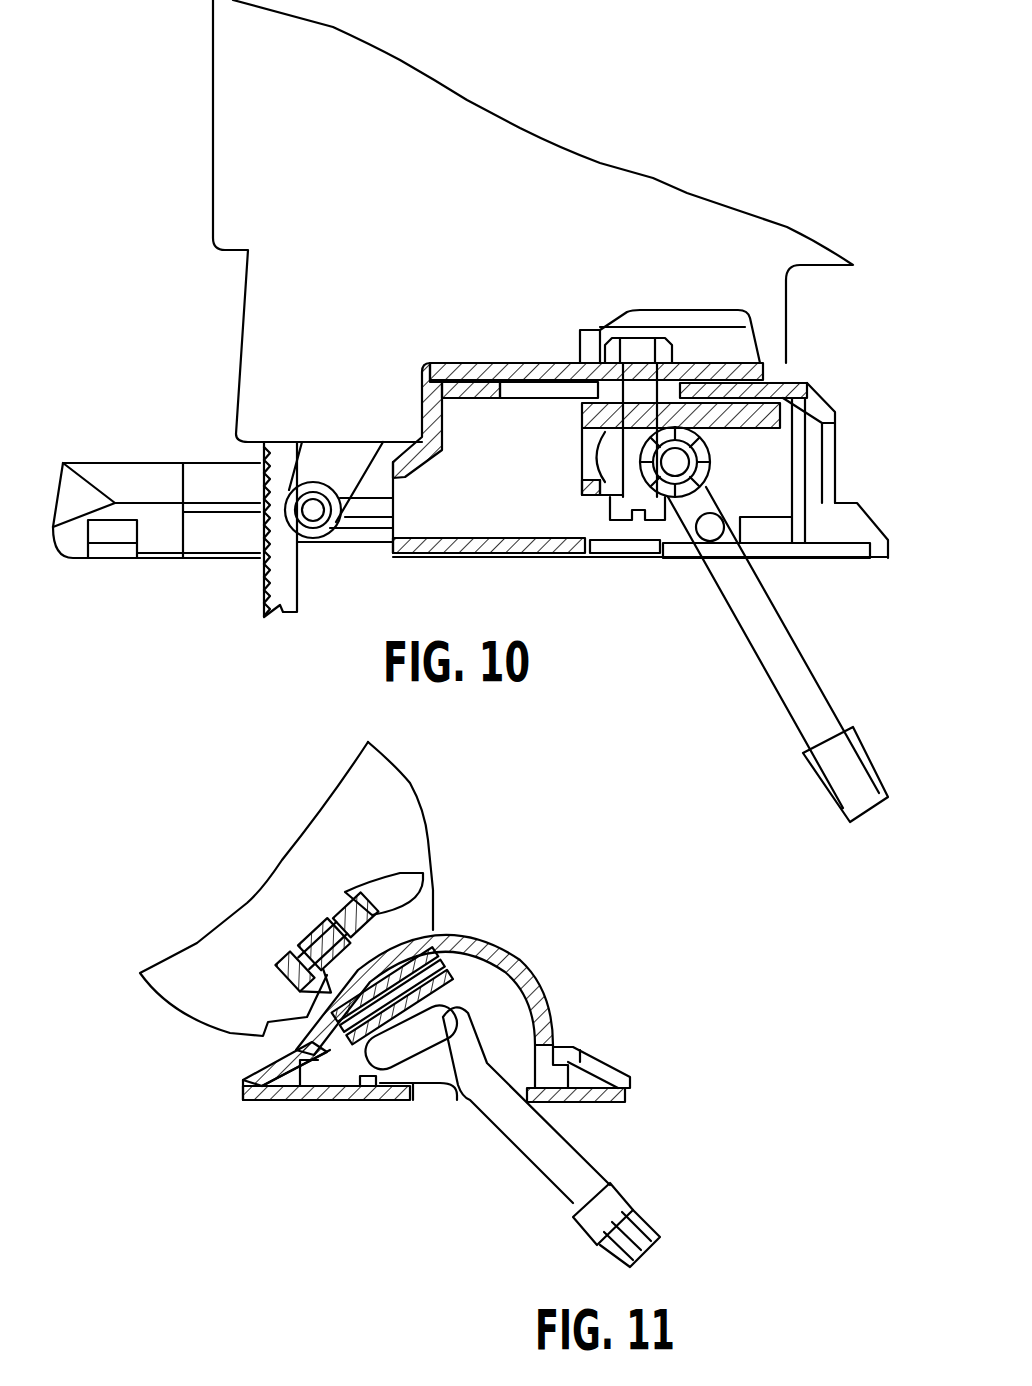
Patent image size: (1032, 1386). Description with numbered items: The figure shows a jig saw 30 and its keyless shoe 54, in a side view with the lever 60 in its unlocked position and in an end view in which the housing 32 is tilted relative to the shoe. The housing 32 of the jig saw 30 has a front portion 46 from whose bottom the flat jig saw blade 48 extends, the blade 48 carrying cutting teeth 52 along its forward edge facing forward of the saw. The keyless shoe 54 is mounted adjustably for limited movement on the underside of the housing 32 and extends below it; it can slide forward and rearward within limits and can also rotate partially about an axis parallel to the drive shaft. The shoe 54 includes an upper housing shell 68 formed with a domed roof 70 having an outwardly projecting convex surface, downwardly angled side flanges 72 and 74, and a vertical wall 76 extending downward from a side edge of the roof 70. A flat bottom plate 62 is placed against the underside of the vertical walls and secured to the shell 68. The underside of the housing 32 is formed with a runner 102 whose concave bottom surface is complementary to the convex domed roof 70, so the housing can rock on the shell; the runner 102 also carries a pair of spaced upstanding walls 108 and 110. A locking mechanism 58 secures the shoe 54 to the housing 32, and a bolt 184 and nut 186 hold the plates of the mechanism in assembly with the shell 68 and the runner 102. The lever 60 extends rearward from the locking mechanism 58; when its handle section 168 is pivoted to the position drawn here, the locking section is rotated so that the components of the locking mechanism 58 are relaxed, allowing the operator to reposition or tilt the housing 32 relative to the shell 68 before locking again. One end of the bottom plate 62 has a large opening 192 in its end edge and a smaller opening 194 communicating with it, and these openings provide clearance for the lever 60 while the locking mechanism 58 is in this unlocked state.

In FIG. 10, the jig saw 30 is at (706, 152).
In FIG. 11, the jig saw 30 is at (238, 812).
In FIG. 10, the housing 32 is at (586, 152).
In FIG. 11, the housing 32 is at (414, 788).
In FIG. 10, the front portion 46 is at (213, 130).
In FIG. 10, the jig saw blade 48 is at (280, 618).
In FIG. 10, the cutting teeth 52 is at (262, 578).
In FIG. 10, the keyless shoe 54 is at (882, 500).
In FIG. 10, the locking mechanism 58 is at (580, 464).
In FIG. 11, the locking mechanism 58 is at (396, 1087).
In FIG. 10, the lever 60 is at (770, 687).
In FIG. 11, the lever 60 is at (545, 1192).
In FIG. 10, the bottom plate 62 is at (822, 560).
In FIG. 11, the bottom plate 62 is at (624, 1112).
In FIG. 10, the upper housing shell 68 is at (843, 448).
In FIG. 11, the upper housing shell 68 is at (560, 1023).
In FIG. 11, the domed roof 70 is at (527, 992).
In FIG. 11, the side flange 72 is at (265, 1066).
In FIG. 11, the side flange 74 is at (598, 1075).
In FIG. 11, the vertical wall 76 is at (330, 1078).
In FIG. 10, the runner 102 is at (770, 338).
In FIG. 11, the runner 102 is at (370, 897).
In FIG. 11, the upstanding wall 108 is at (288, 945).
In FIG. 11, the upstanding wall 110 is at (337, 903).
In FIG. 10, the handle section 168 is at (782, 655).
In FIG. 10, the bolt 184 is at (630, 512).
In FIG. 10, the nut 186 is at (636, 345).
In FIG. 11, the nut 186 is at (316, 934).
In FIG. 11, the large opening 192 is at (366, 1100).
In FIG. 11, the smaller opening 194 is at (428, 1090).